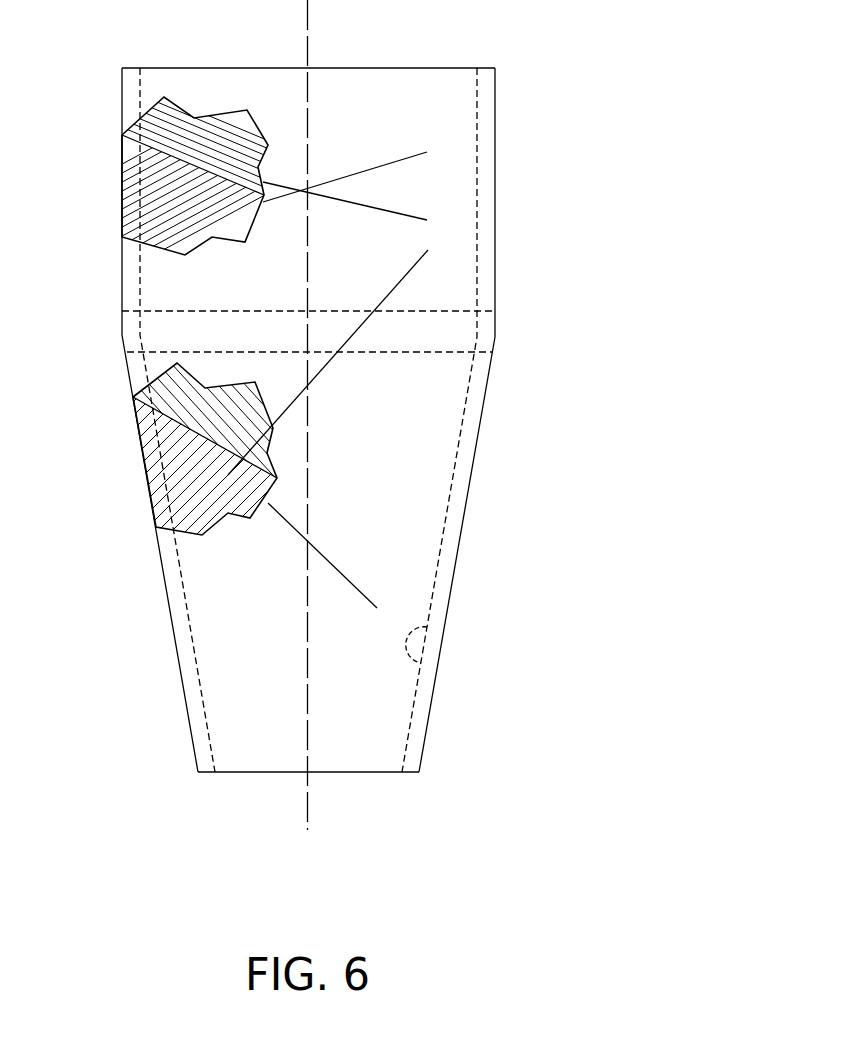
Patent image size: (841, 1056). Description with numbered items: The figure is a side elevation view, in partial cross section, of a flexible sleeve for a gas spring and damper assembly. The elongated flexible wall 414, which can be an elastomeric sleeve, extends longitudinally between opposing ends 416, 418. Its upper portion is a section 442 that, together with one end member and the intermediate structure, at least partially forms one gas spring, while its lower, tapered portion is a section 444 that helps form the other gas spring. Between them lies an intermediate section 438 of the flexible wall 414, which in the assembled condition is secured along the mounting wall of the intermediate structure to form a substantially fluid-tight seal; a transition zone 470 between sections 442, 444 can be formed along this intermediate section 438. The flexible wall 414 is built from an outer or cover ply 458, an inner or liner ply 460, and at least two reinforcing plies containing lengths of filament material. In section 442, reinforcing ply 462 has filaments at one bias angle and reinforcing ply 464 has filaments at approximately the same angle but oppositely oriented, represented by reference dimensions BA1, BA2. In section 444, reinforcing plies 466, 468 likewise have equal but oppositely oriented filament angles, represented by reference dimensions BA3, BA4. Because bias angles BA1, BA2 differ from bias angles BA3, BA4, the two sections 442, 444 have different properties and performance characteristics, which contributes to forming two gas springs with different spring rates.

The flexible wall 414 is at (527, 142).
The end 416 is at (423, 50).
The end 418 is at (410, 792).
The intermediate section 438 is at (495, 320).
The section 442 is at (495, 215).
The section 444 is at (460, 545).
The cover ply 458 is at (382, 700).
The liner ply 460 is at (427, 627).
The reinforcing ply 462 is at (150, 148).
The reinforcing ply 464 is at (150, 207).
The reinforcing ply 466 is at (190, 406).
The reinforcing ply 468 is at (180, 492).
The transition zone 470 is at (152, 333).
The bias angle BA1 is at (384, 190).
The bias angle BA2 is at (275, 83).
The bias angle BA3 is at (351, 345).
The bias angle BA4 is at (309, 473).